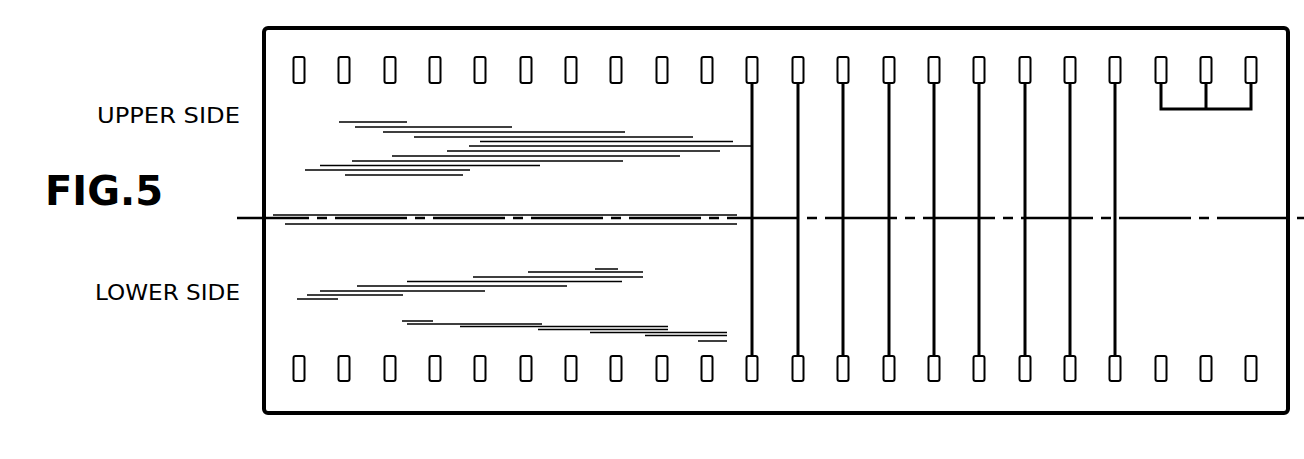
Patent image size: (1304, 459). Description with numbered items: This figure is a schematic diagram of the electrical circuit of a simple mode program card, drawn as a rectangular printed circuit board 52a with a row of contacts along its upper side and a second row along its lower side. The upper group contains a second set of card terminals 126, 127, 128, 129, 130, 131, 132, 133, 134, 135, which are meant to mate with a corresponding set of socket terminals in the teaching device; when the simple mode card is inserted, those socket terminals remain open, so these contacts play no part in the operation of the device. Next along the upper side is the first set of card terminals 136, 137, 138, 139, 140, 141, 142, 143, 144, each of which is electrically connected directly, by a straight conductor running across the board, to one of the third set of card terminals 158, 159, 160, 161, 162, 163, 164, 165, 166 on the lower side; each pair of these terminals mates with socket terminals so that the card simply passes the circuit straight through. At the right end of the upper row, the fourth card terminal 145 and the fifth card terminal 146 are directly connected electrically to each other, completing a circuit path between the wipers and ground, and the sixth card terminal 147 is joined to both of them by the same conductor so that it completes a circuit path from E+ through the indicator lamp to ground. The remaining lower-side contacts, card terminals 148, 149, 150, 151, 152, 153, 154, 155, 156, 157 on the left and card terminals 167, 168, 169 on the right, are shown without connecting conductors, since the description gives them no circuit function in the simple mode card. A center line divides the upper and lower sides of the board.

The printed circuit board 52a is at (245, 353).
The card terminal 126 is at (299, 61).
The card terminal 127 is at (344, 61).
The card terminal 128 is at (390, 61).
The card terminal 129 is at (435, 61).
The card terminal 130 is at (480, 61).
The card terminal 131 is at (526, 61).
The card terminal 132 is at (571, 61).
The card terminal 133 is at (616, 61).
The card terminal 134 is at (662, 61).
The card terminal 135 is at (707, 61).
The card terminal 136 is at (752, 61).
The card terminal 137 is at (798, 61).
The card terminal 138 is at (843, 61).
The card terminal 139 is at (889, 61).
The card terminal 140 is at (934, 61).
The card terminal 141 is at (979, 61).
The card terminal 142 is at (1025, 61).
The card terminal 143 is at (1070, 61).
The card terminal 144 is at (1115, 61).
The fourth card terminal 145 is at (1161, 61).
The fifth card terminal 146 is at (1206, 61).
The sixth card terminal 147 is at (1251, 61).
The card terminal 148 is at (299, 379).
The card terminal 149 is at (344, 379).
The card terminal 150 is at (390, 379).
The card terminal 151 is at (435, 379).
The card terminal 152 is at (480, 379).
The card terminal 153 is at (526, 379).
The card terminal 154 is at (571, 379).
The card terminal 155 is at (616, 379).
The card terminal 156 is at (662, 379).
The card terminal 157 is at (707, 379).
The card terminal 158 is at (752, 379).
The card terminal 159 is at (798, 379).
The card terminal 160 is at (843, 379).
The card terminal 161 is at (889, 379).
The card terminal 162 is at (934, 379).
The card terminal 163 is at (979, 379).
The card terminal 164 is at (1025, 379).
The card terminal 165 is at (1070, 379).
The card terminal 166 is at (1115, 379).
The card terminal 167 is at (1161, 379).
The card terminal 168 is at (1206, 379).
The card terminal 169 is at (1251, 379).